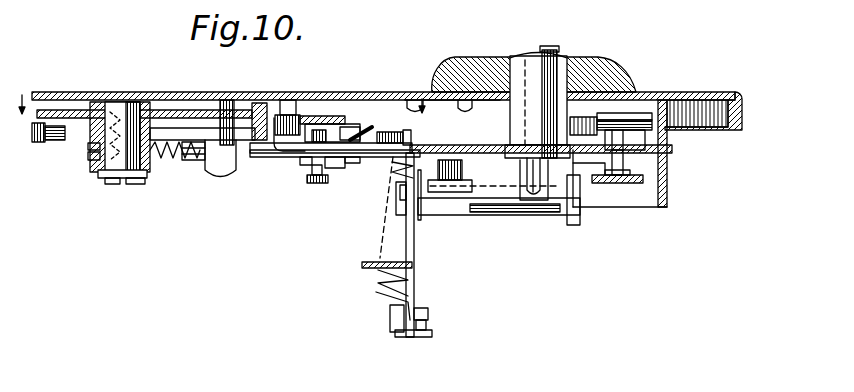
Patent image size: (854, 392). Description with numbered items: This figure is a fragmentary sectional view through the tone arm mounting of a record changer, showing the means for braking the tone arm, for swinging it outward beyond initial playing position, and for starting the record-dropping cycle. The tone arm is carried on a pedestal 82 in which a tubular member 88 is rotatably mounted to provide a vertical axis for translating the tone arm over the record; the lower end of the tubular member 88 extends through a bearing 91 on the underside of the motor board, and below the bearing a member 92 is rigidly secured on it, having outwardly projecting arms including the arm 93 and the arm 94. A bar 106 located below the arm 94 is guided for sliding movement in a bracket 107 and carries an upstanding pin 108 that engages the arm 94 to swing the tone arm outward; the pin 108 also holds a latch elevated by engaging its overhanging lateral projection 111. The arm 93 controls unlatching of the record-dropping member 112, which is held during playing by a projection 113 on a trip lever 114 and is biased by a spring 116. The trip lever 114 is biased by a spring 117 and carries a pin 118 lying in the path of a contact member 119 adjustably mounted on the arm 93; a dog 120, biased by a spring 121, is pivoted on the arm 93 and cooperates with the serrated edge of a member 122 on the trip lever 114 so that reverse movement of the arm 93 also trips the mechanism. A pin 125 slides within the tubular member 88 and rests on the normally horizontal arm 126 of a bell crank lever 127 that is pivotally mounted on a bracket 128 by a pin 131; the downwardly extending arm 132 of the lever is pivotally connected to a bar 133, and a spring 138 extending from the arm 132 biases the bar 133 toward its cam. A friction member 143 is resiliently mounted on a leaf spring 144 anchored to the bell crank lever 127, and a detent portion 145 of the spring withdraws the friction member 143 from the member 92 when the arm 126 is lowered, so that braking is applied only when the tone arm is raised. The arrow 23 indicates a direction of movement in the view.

The direction arrow 23 is at (233, 102).
The pedestal 82 is at (634, 74).
The tubular member 88 is at (577, 72).
The bearing 91 is at (489, 117).
The member 92 is at (456, 145).
The arm 93 is at (383, 153).
The arm 94 is at (592, 178).
The bar 106 is at (594, 165).
The bracket 107 is at (648, 192).
The upstanding pin 108 is at (598, 122).
The overhanging lateral projection 111 is at (643, 120).
The member 112 is at (160, 100).
The projection 113 is at (262, 104).
The trip lever 114 is at (202, 124).
The spring 116 is at (37, 142).
The spring 117 is at (160, 160).
The pin 118 is at (317, 138).
The contact member 119 is at (265, 167).
The dog 120 is at (293, 152).
The spring 121 is at (392, 158).
The member 122 is at (334, 116).
The pin 125 is at (538, 47).
The arm 126 is at (526, 213).
The bell crank lever 127 is at (420, 279).
The bracket 128 is at (478, 115).
The pin 131 is at (516, 215).
The arm 132 is at (416, 337).
The bar 133 is at (368, 270).
The spring 138 is at (378, 292).
The friction member 143 is at (428, 213).
The leaf spring 144 is at (287, 98).
The detent portion 145 is at (455, 212).